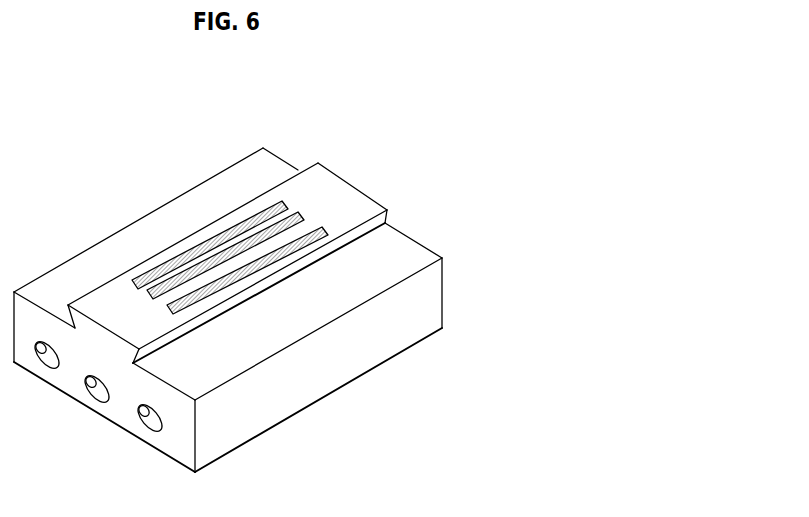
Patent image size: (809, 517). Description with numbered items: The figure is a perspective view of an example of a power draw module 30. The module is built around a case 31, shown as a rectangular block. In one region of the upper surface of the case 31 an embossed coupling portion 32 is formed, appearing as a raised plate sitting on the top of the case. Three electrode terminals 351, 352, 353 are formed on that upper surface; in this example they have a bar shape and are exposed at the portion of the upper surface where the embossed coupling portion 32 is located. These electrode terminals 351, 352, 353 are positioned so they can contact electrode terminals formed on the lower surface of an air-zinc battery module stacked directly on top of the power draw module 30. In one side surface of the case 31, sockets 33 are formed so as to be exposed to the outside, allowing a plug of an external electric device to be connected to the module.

The power draw module 30 is at (495, 90).
The case 31 is at (375, 340).
The embossed coupling portion 32 is at (352, 198).
The sockets 33 is at (140, 412).
The electrode terminal 351 is at (151, 276).
The electrode terminal 352 is at (187, 283).
The electrode terminal 353 is at (222, 290).